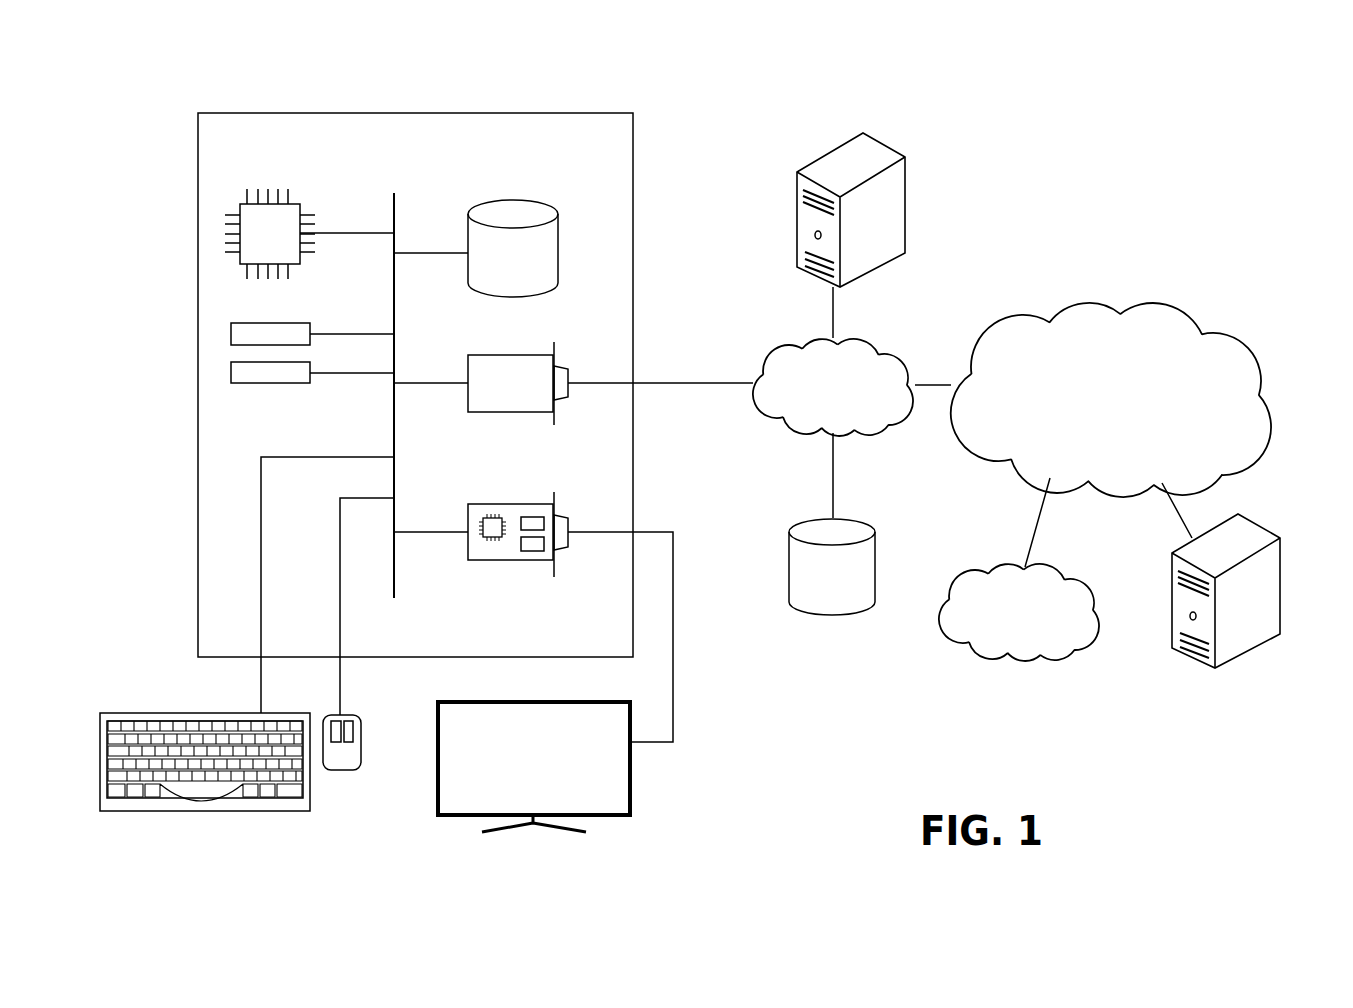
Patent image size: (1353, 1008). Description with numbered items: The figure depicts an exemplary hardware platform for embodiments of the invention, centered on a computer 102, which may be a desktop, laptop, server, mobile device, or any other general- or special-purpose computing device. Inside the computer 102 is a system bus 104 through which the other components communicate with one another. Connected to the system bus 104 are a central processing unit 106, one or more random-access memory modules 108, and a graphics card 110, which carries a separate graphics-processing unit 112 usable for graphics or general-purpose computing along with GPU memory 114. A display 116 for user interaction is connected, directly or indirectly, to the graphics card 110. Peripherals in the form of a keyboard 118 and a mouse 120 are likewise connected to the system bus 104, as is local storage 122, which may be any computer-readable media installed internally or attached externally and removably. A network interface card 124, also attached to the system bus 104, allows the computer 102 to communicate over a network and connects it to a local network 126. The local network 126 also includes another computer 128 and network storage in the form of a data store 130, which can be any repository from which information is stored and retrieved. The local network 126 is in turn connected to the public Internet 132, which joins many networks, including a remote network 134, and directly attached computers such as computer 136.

The computer 102 is at (585, 112).
The system bus 104 is at (394, 203).
The central processing unit 106 is at (295, 200).
The random-access memory modules 108 is at (312, 366).
The graphics card 110 is at (510, 534).
The graphics-processing unit 112 is at (492, 538).
The GPU memory 114 is at (530, 548).
The display 116 is at (632, 797).
The keyboard 118 is at (207, 813).
The mouse 120 is at (339, 775).
The local storage 122 is at (558, 233).
The network interface card 124 is at (467, 367).
The local network 126 is at (888, 340).
The computer 128 is at (888, 143).
The data store 130 is at (867, 520).
The public Internet 132 is at (1157, 300).
The remote network 134 is at (1077, 565).
The computer 136 is at (1255, 520).